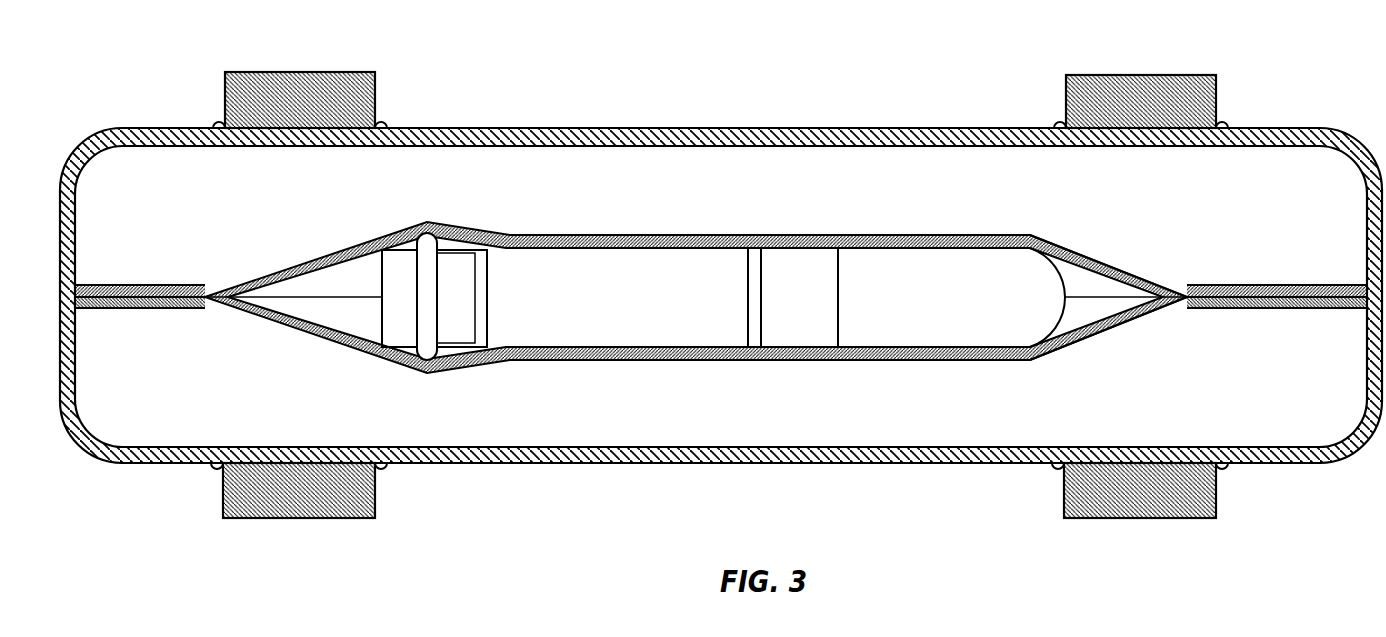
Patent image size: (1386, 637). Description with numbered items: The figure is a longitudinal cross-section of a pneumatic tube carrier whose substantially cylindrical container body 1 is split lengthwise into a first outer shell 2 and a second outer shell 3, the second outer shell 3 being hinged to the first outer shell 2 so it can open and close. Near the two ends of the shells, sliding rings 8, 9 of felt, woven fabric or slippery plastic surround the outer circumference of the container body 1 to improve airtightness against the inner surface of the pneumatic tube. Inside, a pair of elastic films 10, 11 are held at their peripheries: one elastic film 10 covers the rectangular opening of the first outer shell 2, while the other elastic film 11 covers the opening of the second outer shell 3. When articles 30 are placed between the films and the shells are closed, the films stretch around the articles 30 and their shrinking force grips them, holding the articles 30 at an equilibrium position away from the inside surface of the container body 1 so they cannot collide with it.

The container body 1 is at (849, 122).
The first outer shell 2 is at (528, 465).
The second outer shell 3 is at (632, 128).
The sliding ring 8 is at (1138, 75).
The sliding ring 9 is at (288, 72).
The elastic film 10 is at (1138, 332).
The elastic film 11 is at (1138, 270).
The articles 30 is at (640, 260).